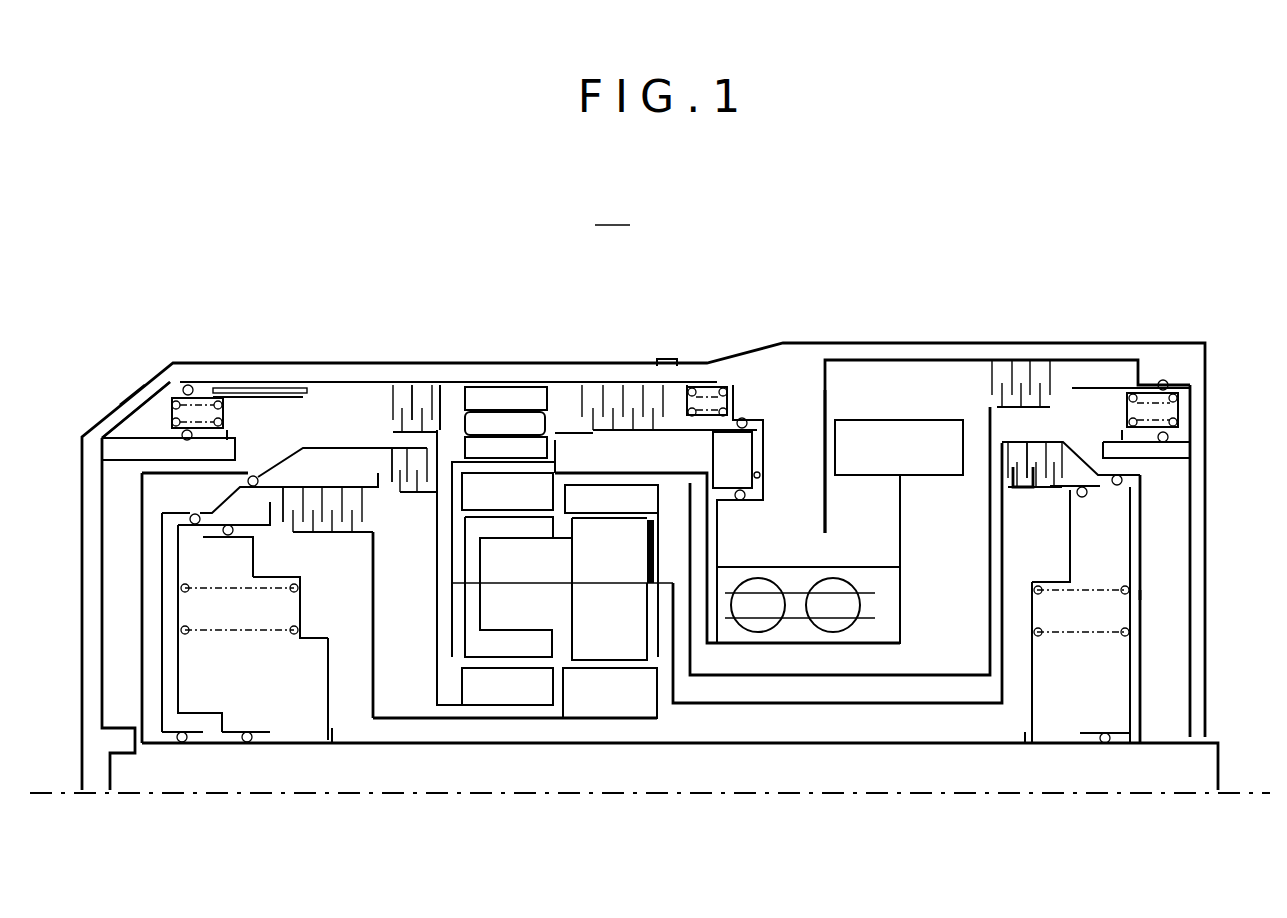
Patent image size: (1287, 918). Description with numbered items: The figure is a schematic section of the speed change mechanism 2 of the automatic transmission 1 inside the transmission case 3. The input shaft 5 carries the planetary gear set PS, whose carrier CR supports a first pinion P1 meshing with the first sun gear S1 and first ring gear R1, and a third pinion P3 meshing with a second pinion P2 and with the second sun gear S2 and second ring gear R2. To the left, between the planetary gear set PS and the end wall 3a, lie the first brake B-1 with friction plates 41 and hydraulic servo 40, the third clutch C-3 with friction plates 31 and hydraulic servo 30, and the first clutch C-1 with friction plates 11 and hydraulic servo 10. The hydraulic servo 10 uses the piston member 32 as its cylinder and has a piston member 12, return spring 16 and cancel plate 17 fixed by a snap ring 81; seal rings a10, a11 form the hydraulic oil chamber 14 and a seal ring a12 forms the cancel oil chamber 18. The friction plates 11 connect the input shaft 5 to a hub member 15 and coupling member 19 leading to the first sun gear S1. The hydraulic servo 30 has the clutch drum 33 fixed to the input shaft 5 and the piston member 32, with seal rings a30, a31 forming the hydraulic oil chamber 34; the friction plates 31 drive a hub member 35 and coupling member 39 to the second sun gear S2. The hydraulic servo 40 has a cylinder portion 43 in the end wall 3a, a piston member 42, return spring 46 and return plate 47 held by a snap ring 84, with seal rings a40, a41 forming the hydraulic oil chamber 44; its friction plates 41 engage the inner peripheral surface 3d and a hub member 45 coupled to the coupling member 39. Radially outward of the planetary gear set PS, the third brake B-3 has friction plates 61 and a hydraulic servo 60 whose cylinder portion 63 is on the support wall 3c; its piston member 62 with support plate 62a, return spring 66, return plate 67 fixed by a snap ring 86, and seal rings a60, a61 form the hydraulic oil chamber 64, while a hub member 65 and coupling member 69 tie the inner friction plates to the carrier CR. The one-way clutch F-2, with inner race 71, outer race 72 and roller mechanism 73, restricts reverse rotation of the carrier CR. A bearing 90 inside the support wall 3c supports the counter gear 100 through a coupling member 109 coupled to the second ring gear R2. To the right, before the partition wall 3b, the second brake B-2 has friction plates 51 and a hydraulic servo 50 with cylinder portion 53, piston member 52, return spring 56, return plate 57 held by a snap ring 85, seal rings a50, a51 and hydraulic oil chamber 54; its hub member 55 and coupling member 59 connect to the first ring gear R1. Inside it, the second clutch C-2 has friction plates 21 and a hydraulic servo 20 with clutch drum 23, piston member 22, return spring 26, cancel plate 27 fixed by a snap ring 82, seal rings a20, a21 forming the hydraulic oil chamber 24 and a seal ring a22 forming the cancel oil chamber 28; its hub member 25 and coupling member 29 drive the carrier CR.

The automatic transmission 1 is at (603, 262).
The speed change mechanism 2 is at (738, 336).
The transmission case 3 is at (810, 341).
The end wall 3a is at (82, 487).
The partition wall 3b is at (1205, 532).
The support wall 3c is at (827, 392).
The inner peripheral surface 3d is at (905, 360).
The input shaft 5 is at (1218, 775).
The hydraulic servo 10 is at (150, 645).
The friction plates 11 is at (310, 538).
The piston member 12 is at (180, 672).
The hydraulic oil chamber 14 is at (180, 700).
The hub member 15 is at (318, 538).
The return spring 16 is at (222, 593).
The cancel plate 17 is at (302, 616).
The cancel oil chamber 18 is at (312, 672).
The coupling member 19 is at (394, 720).
The hydraulic servo 20 is at (1152, 593).
The friction plates 21 is at (1040, 490).
The piston member 22 is at (1128, 563).
The clutch drum 23 is at (1142, 563).
The hydraulic oil chamber 24 is at (1133, 722).
The hub member 25 is at (1024, 489).
The return spring 26 is at (1065, 627).
The cancel plate 27 is at (1067, 562).
The cancel oil chamber 28 is at (1108, 678).
The coupling member 29 is at (930, 703).
The hydraulic servo 30 is at (130, 597).
The friction plates 31 is at (394, 498).
The piston member 32 is at (168, 574).
The clutch drum 33 is at (147, 543).
The hydraulic oil chamber 34 is at (142, 545).
The hub member 35 is at (412, 497).
The coupling member 39 is at (435, 630).
The hydraulic servo 40 is at (130, 403).
The friction plates 41 is at (438, 400).
The piston member 42 is at (285, 398).
The cylinder portion 43 is at (135, 400).
The hydraulic oil chamber 44 is at (145, 382).
The hub member 45 is at (410, 433).
The return spring 46 is at (222, 388).
The return plate 47 is at (225, 411).
The hydraulic servo 50 is at (1198, 403).
The friction plates 51 is at (1036, 443).
The piston member 52 is at (1192, 438).
The cylinder portion 53 is at (1190, 388).
The hydraulic oil chamber 54 is at (1192, 420).
The hub member 55 is at (1002, 408).
The return spring 56 is at (1148, 420).
The return plate 57 is at (1125, 409).
The coupling member 59 is at (920, 675).
The hydraulic servo 60 is at (770, 440).
The friction plates 61 is at (655, 430).
The piston member 62 is at (753, 458).
The support plate 62a is at (728, 402).
The cylinder portion 63 is at (762, 476).
The hydraulic oil chamber 64 is at (765, 460).
The hub member 65 is at (600, 432).
The return spring 66 is at (712, 390).
The return plate 67 is at (692, 392).
The coupling member 69 is at (514, 462).
The inner race 71 is at (487, 455).
The outer race 72 is at (525, 395).
The roller mechanism 73 is at (501, 427).
The snap ring 81 is at (334, 734).
The snap ring 82 is at (1023, 736).
The snap ring 84 is at (230, 436).
The snap ring 85 is at (1120, 436).
The snap ring 86 is at (668, 366).
The bearing 90 is at (790, 562).
The counter gear 100 is at (908, 420).
The coupling member 109 is at (903, 587).
The seal ring a10 is at (248, 743).
The seal ring a11 is at (194, 513).
The seal ring a12 is at (228, 536).
The seal ring a20 is at (1104, 732).
The seal ring a21 is at (1117, 486).
The seal ring a22 is at (1083, 498).
The seal ring a30 is at (184, 743).
The seal ring a31 is at (256, 476).
The seal ring a40 is at (187, 441).
The seal ring a41 is at (190, 384).
The seal ring a50 is at (1163, 443).
The seal ring a51 is at (1164, 380).
The seal ring a60 is at (741, 501).
The seal ring a61 is at (746, 420).
The first brake B-1 is at (414, 378).
The second brake B-2 is at (1010, 357).
The third brake B-3 is at (613, 378).
The first clutch C-1 is at (322, 462).
The second clutch C-2 is at (1064, 455).
The third clutch C-3 is at (367, 445).
The one-way clutch F-2 is at (493, 378).
The first pinion P1 is at (603, 662).
The second pinion P2 is at (507, 632).
The third pinion P3 is at (481, 657).
The planetary gear set PS is at (635, 450).
The first ring gear R1 is at (632, 503).
The second ring gear R2 is at (537, 488).
The first sun gear S1 is at (580, 707).
The second sun gear S2 is at (537, 706).
The carrier CR is at (660, 548).